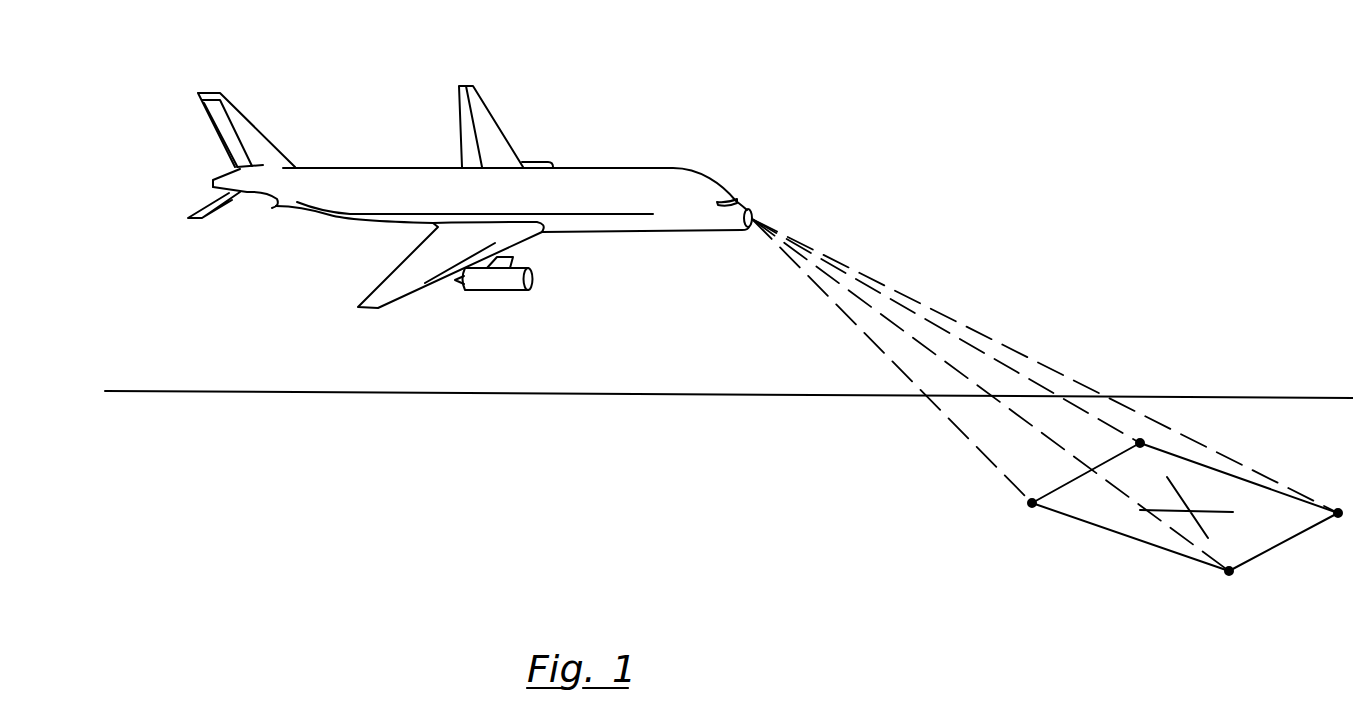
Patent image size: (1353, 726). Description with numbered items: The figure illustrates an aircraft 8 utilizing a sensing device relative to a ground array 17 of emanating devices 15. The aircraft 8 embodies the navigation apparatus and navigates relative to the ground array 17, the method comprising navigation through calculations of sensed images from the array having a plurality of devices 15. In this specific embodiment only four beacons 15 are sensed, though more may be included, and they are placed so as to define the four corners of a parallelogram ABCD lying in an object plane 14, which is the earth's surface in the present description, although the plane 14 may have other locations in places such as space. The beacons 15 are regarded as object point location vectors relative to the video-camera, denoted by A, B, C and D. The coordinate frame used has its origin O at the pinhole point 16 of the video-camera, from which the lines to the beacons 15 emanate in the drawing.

The aircraft 8 is at (627, 167).
The pinhole point 16 is at (756, 213).
The object plane 14 is at (1088, 586).
The emanating devices 15 is at (1027, 503).
The ground array 17 is at (1277, 550).